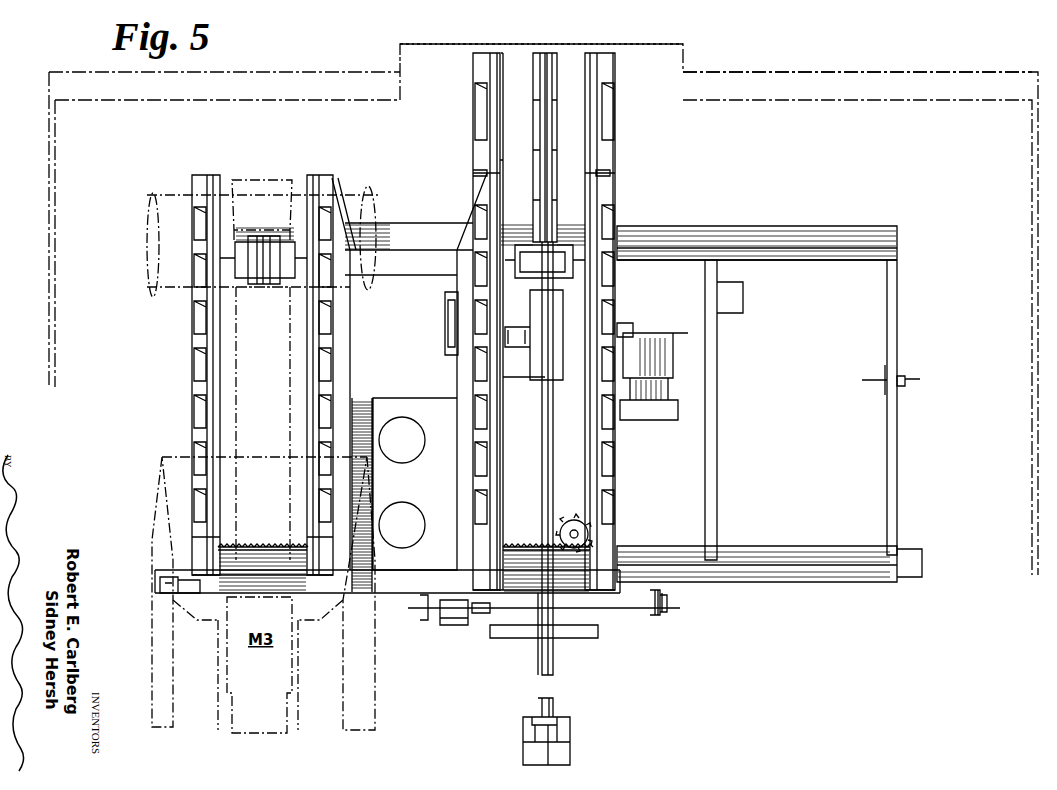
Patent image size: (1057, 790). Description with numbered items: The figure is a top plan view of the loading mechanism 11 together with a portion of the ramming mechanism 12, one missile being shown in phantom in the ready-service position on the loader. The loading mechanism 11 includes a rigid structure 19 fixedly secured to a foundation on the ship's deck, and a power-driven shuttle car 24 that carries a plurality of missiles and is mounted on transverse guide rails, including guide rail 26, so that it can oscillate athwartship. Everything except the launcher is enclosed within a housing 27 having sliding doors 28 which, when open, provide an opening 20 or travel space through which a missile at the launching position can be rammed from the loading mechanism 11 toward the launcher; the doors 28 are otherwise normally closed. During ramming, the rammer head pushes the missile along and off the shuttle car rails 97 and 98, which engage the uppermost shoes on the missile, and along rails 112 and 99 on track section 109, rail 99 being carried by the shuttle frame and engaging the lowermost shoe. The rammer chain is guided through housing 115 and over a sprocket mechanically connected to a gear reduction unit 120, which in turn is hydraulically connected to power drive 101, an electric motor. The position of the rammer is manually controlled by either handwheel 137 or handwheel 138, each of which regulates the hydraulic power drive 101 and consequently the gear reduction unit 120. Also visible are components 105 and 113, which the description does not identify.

The loading mechanism 11 is at (762, 214).
The ramming mechanism 12 is at (520, 713).
The rigid structure 19 is at (805, 546).
The opening 20 is at (685, 74).
The shuttle car 24 is at (413, 260).
The transverse guide rail 26 is at (838, 260).
The housing 27 is at (1030, 159).
The sliding doors 28 is at (666, 44).
The shuttle car rail 97 is at (209, 175).
The shuttle car rail 98 is at (312, 175).
The rail 99 is at (546, 55).
The power drive 101 is at (678, 425).
The coupling 105 is at (256, 258).
The track section 109 is at (497, 53).
The rail 112 is at (474, 71).
The switch 113 is at (160, 584).
The housing 115 is at (548, 412).
The gear reduction unit 120 is at (445, 300).
The handwheel 137 is at (657, 618).
The handwheel 138 is at (425, 622).